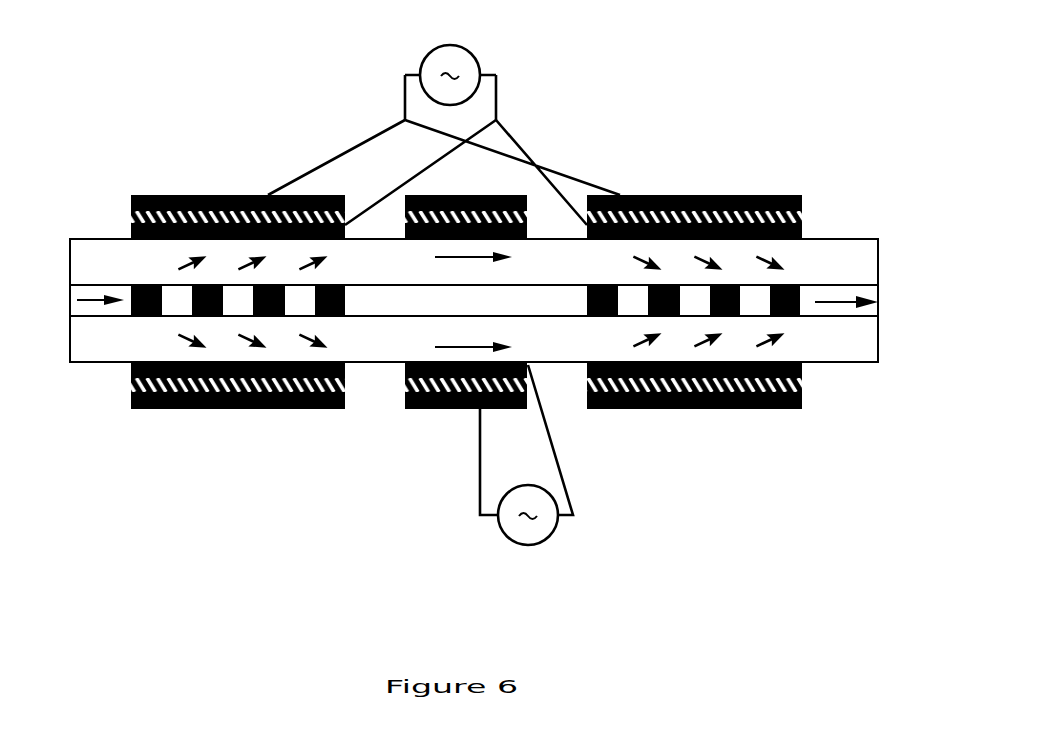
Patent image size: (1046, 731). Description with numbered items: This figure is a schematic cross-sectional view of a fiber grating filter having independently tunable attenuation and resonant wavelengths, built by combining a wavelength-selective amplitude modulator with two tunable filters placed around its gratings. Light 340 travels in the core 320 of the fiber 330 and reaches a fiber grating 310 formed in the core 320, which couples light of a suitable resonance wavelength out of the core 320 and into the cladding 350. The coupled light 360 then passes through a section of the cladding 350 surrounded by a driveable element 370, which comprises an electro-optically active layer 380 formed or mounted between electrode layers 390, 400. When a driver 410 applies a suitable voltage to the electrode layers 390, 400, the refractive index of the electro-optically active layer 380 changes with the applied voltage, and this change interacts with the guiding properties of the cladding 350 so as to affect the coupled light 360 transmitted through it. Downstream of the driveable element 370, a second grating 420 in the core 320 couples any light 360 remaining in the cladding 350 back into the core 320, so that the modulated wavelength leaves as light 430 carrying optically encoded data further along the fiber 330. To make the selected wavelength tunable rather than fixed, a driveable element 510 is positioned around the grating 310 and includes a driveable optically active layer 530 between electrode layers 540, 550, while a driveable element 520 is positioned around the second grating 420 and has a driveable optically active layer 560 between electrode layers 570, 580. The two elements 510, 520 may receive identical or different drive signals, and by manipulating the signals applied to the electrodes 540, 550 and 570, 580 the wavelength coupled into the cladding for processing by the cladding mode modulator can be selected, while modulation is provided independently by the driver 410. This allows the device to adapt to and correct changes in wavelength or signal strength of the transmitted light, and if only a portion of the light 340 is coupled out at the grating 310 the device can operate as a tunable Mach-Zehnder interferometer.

The fiber grating 310 is at (178, 299).
The core 320 is at (80, 312).
The fiber 330 is at (863, 240).
The light 340 is at (90, 298).
The cladding 350 is at (88, 352).
The coupled light 360 is at (183, 267).
The driveable element 370 is at (466, 417).
The electro-optically active layer 380 is at (405, 387).
The electrode layer 390 is at (405, 370).
The electrode layer 400 is at (422, 410).
The driver 410 is at (542, 527).
The second grating 420 is at (780, 317).
The light 430 is at (853, 298).
The driveable element 510 is at (238, 417).
The driveable element 520 is at (694, 416).
The driveable optically active layer 530 is at (130, 220).
The electrode layer 540 is at (130, 230).
The electrode layer 550 is at (175, 195).
The driveable optically active layer 560 is at (803, 220).
The electrode layer 570 is at (803, 235).
The electrode layer 580 is at (693, 193).